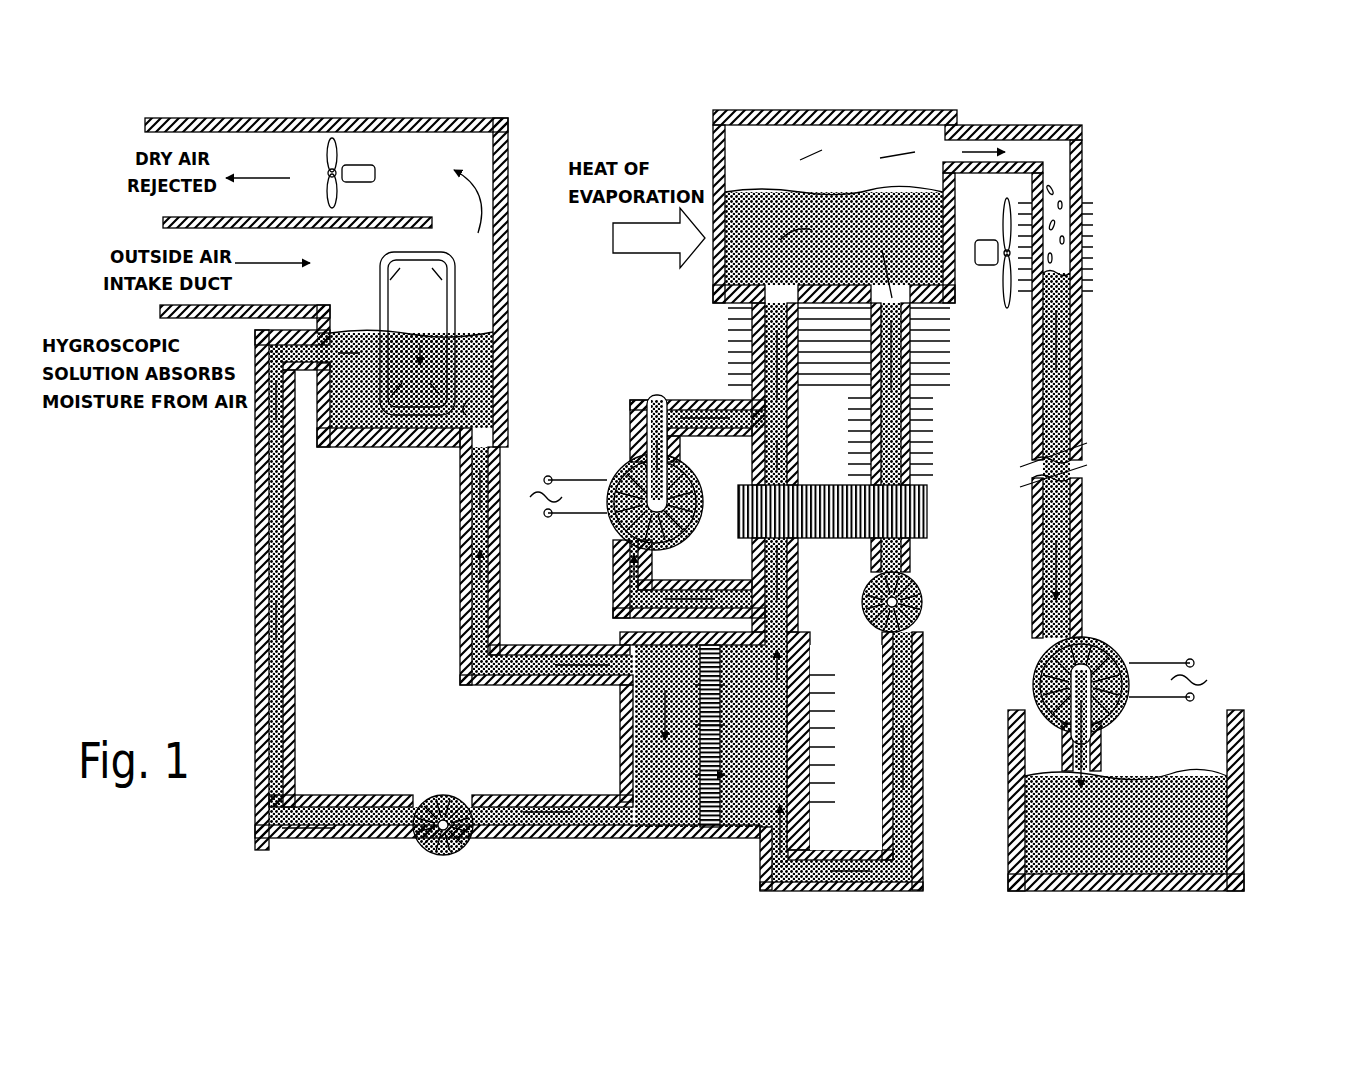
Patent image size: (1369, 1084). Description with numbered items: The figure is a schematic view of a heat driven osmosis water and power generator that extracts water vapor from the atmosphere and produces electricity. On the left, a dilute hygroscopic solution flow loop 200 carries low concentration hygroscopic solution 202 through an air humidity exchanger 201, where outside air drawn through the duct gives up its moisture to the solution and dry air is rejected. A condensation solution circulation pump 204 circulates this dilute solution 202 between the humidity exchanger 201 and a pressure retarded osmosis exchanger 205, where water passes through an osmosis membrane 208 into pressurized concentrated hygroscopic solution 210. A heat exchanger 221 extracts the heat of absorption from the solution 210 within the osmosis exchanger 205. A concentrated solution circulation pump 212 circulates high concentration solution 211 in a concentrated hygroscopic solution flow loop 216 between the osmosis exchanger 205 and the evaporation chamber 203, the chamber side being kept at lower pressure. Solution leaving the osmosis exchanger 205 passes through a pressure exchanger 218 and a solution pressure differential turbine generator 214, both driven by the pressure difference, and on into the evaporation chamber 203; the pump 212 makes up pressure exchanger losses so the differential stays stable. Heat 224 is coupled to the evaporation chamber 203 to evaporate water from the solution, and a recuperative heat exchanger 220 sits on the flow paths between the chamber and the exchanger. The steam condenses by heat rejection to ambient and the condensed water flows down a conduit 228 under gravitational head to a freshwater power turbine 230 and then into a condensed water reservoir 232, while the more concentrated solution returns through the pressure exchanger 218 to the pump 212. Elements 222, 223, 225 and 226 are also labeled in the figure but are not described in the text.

The dilute hygroscopic solution flow loop 200 is at (258, 690).
The air humidity exchanger 201 is at (508, 295).
The dilute hygroscopic solution 202 is at (473, 363).
The evaporation chamber 203 is at (713, 165).
The condensation solution circulation pump 204 is at (443, 795).
The pressure retarded osmosis exchanger 205 is at (620, 758).
The osmosis membrane 208 is at (703, 805).
The concentrated hygroscopic solution 210 is at (780, 670).
The high concentration solution 211 is at (923, 840).
The concentrated solution circulation pump 212 is at (925, 592).
The solution pressure differential turbine generator 214 is at (620, 477).
The concentrated hygroscopic solution flow loop 216 is at (917, 713).
The pressure exchanger 218 is at (922, 520).
The recuperative heat exchanger 220 is at (728, 362).
The heat exchanger 221 is at (818, 747).
The fins 222 is at (905, 345).
The fins 223 is at (925, 445).
The heat 224 is at (659, 238).
The condenser fins 225 is at (1093, 215).
The condensate channel 226 is at (1062, 372).
The conduit 228 is at (1075, 432).
The freshwater power turbine 230 is at (1116, 648).
The condensed water reservoir 232 is at (1245, 776).